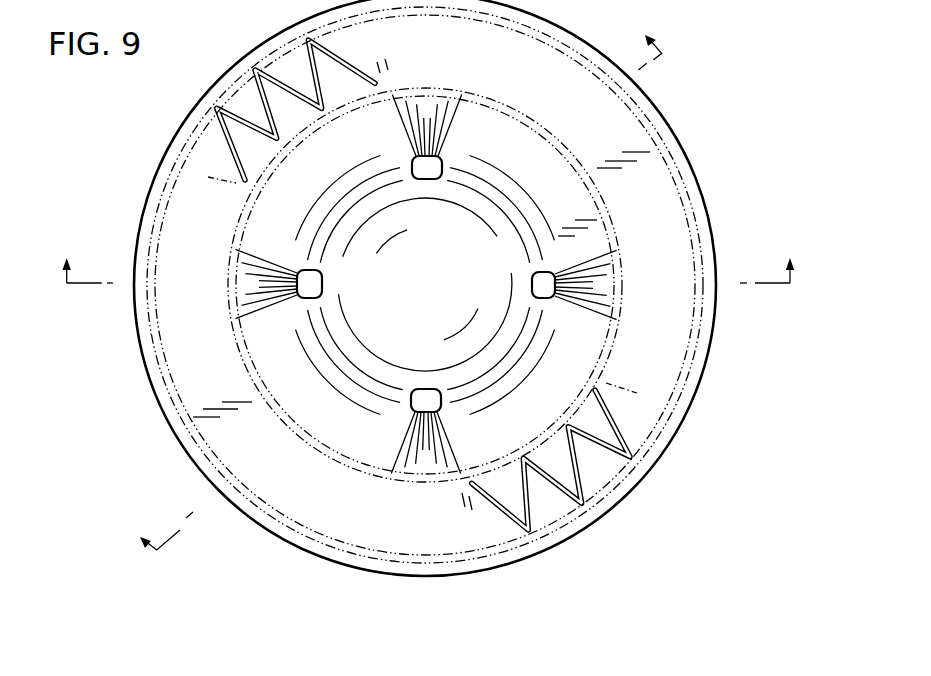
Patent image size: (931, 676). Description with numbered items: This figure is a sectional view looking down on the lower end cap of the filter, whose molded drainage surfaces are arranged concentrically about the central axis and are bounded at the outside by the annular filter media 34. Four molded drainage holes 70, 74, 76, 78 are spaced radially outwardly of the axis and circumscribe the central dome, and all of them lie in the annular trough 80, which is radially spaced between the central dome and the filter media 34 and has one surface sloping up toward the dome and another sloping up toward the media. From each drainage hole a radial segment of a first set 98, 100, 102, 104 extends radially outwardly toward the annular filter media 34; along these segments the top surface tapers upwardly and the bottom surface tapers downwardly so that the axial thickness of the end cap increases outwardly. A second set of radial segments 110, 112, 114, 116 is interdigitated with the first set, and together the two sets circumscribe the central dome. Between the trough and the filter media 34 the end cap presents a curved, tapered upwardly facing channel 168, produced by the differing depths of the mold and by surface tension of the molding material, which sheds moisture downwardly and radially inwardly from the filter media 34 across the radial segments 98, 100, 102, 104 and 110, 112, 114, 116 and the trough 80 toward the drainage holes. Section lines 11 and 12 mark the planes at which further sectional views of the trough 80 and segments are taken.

The section line 11- 11 is at (428, 285).
The section line 12- 12 is at (414, 305).
The annular filter media 34 is at (620, 417).
The drainage hole 70 is at (312, 282).
The drainage hole 74 is at (422, 172).
The drainage hole 76 is at (532, 287).
The drainage hole 78 is at (426, 400).
The annular trough 80 is at (482, 182).
The radial segment 98 is at (252, 273).
The radial segment 100 is at (460, 127).
The radial segment 102 is at (585, 290).
The radial segment 104 is at (435, 458).
The radial segment 110 is at (368, 147).
The radial segment 112 is at (581, 204).
The radial segment 114 is at (568, 406).
The radial segment 116 is at (358, 434).
The upwardly facing channel 168 is at (252, 292).